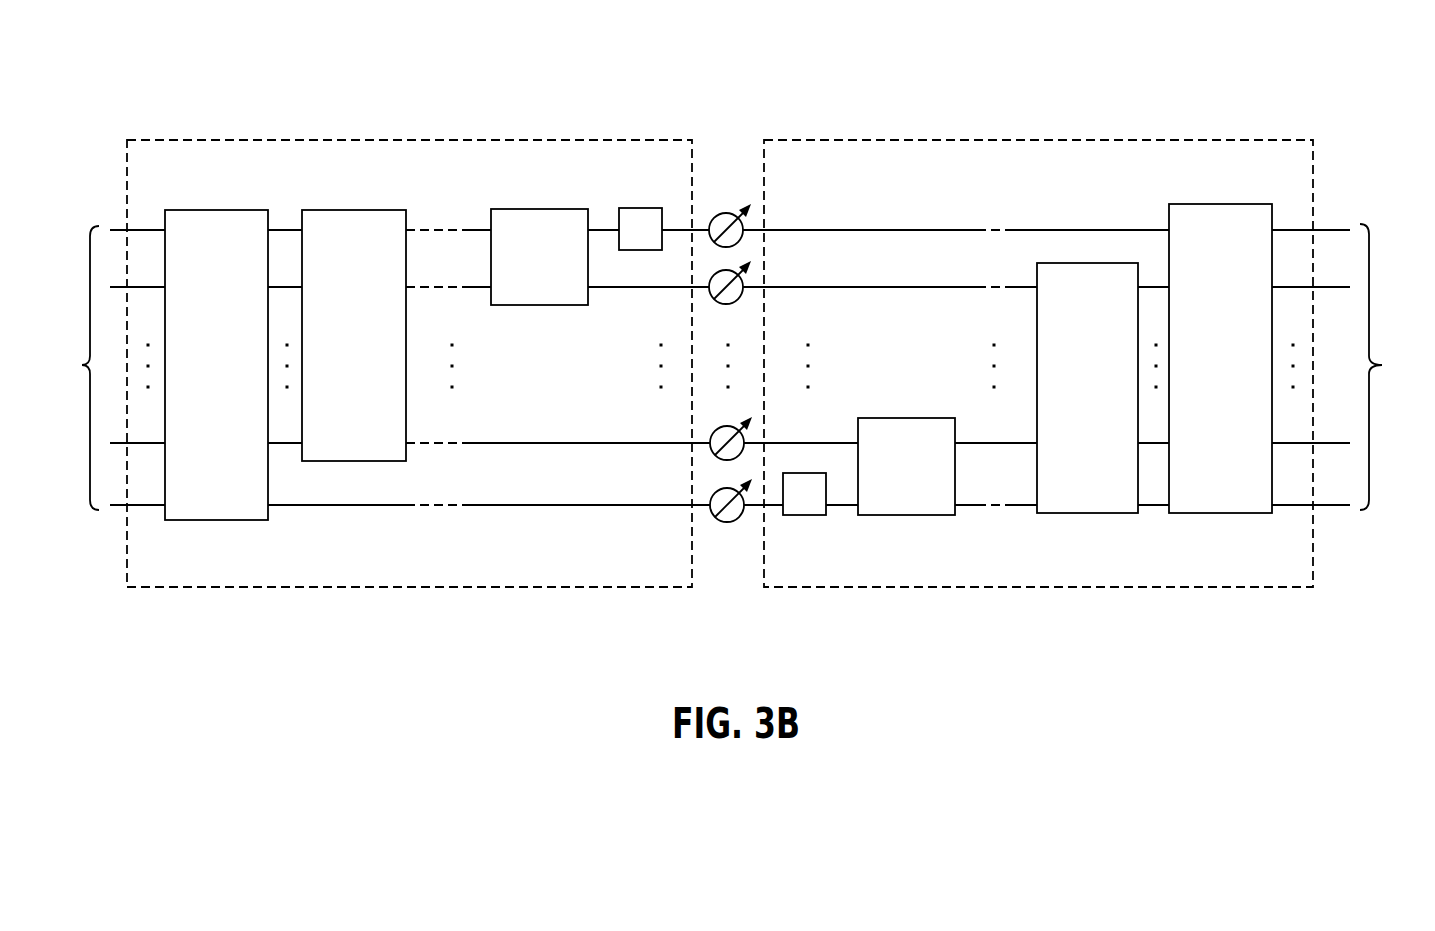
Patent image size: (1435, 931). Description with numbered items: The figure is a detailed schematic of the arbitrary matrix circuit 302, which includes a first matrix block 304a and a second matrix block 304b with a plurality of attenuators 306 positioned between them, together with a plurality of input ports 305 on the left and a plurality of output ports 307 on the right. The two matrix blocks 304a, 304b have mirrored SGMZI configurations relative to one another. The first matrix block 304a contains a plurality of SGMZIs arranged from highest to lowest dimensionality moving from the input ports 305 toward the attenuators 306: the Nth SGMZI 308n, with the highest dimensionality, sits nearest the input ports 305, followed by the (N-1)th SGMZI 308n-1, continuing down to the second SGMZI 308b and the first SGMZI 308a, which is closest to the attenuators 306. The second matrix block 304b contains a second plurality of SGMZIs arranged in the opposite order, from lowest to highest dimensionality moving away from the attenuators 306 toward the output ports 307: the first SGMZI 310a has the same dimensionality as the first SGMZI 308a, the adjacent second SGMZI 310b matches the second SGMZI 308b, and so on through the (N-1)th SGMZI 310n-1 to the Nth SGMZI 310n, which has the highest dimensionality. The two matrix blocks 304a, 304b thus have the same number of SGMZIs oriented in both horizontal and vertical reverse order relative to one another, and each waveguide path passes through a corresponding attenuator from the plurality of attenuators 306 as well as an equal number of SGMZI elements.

The arbitrary matrix circuit 302 is at (259, 91).
The first matrix block 304a is at (420, 140).
The second matrix block 304b is at (1031, 140).
The input ports 305 is at (105, 368).
The attenuators 306 is at (693, 127).
The output ports 307 is at (1345, 367).
The first SGMZI 308a is at (641, 208).
The second SGMZI 308b is at (533, 209).
The (N-1)th SGMZI 308n-1 is at (357, 210).
The Nth SGMZI 308n is at (213, 210).
The first SGMZI 310a is at (804, 515).
The second SGMZI 310b is at (908, 515).
The (N-1)th SGMZI 310n-1 is at (1088, 513).
The Nth SGMZI 310n is at (1221, 513).